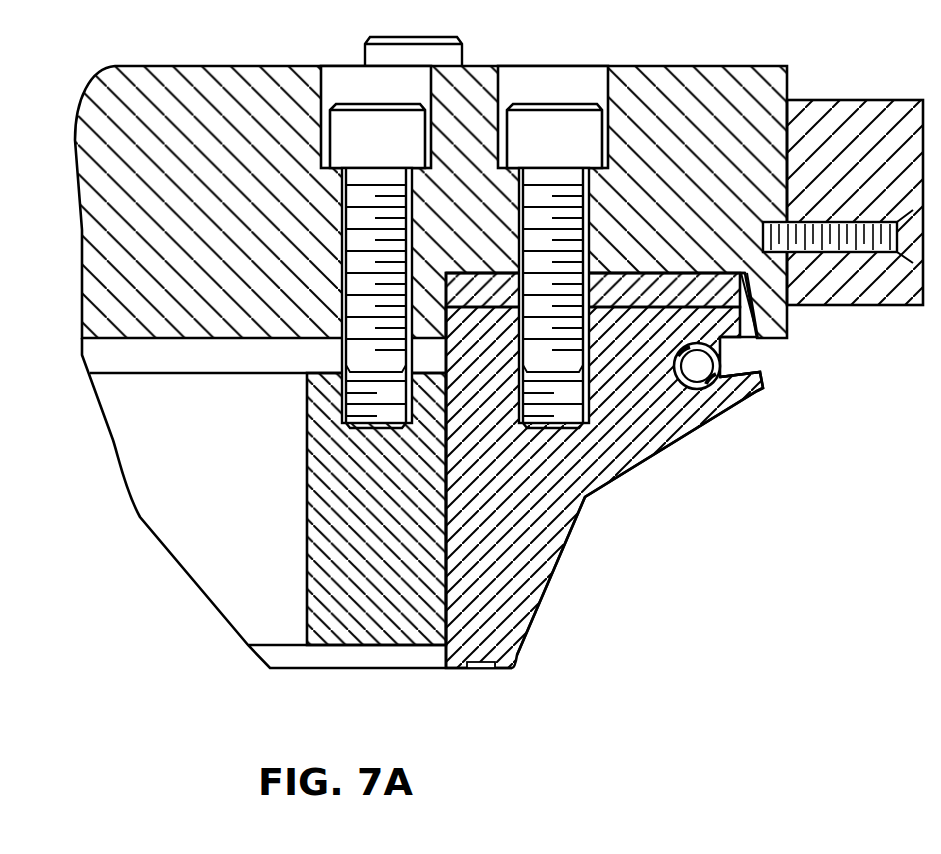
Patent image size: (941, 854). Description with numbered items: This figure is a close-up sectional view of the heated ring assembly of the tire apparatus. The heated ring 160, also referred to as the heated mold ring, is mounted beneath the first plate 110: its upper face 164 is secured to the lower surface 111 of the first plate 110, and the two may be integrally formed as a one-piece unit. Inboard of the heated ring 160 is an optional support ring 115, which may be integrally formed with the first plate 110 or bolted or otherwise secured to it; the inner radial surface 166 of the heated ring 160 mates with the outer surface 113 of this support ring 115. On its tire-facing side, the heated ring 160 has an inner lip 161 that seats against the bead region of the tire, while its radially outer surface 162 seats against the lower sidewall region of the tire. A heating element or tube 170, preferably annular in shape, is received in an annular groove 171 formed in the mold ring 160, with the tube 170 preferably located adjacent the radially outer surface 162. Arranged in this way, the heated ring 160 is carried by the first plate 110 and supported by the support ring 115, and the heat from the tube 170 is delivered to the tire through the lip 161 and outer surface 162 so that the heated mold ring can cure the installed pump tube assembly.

The first plate 110 is at (687, 67).
The upper face 164 is at (626, 306).
The lower surface 111 is at (664, 268).
The heating element or tube 170 is at (720, 360).
The annular groove 171 is at (720, 374).
The radially outer surface 162 is at (722, 410).
The heated ring 160 is at (585, 497).
The outer surface 113 is at (447, 517).
The inner radial surface 166 is at (446, 490).
The support ring 115 is at (307, 573).
The inner lip 161 is at (537, 608).